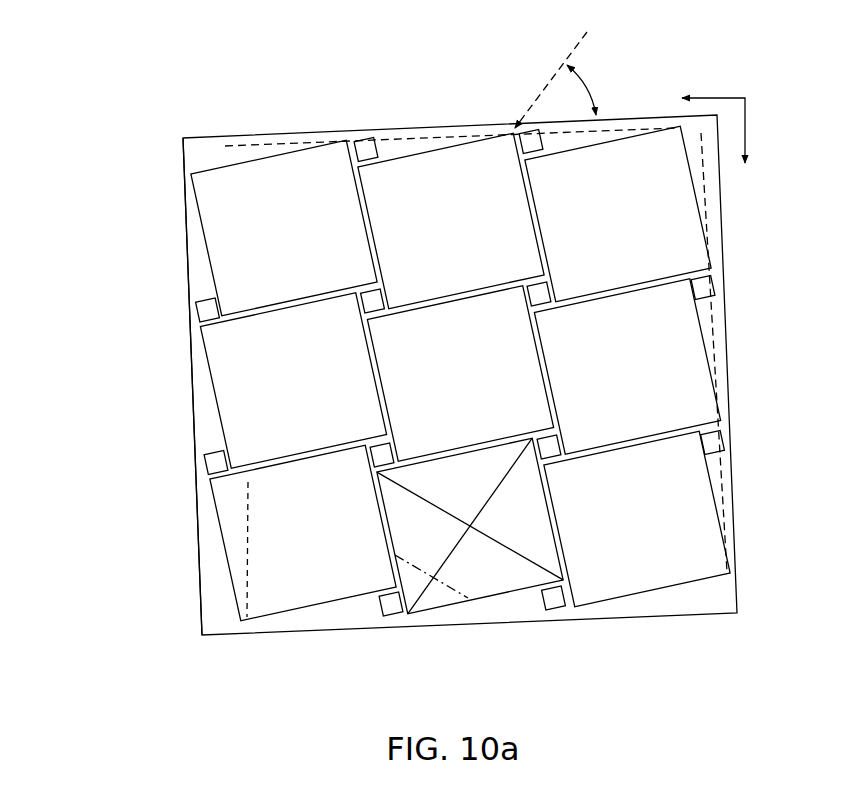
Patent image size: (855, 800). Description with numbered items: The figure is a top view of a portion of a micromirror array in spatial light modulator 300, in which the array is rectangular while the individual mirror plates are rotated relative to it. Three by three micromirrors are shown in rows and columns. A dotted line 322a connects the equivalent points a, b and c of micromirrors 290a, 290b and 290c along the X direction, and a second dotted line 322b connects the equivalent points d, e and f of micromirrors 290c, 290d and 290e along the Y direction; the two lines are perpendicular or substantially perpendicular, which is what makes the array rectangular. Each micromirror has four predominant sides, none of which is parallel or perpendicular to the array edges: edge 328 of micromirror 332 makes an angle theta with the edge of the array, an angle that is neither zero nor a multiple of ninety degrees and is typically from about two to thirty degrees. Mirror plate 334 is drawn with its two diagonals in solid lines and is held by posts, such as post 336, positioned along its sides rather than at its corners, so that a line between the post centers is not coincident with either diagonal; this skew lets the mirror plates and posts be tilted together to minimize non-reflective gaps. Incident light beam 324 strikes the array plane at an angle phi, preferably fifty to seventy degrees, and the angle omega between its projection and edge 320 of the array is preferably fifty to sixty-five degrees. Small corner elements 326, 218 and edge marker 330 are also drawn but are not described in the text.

The spatial light modulator 300 is at (146, 144).
The edge of the micromirror array 320 is at (258, 132).
The dotted line 322a is at (407, 137).
The dotted line 322b is at (715, 348).
The incident light beam 324 is at (550, 83).
The alignment mark 326 is at (210, 455).
The edge of micromirror 328 is at (222, 537).
The substrate edge 330 is at (200, 597).
The micromirror 332 is at (318, 575).
The mirror plate 334 is at (487, 575).
The post 336 is at (553, 590).
The alignment mark 218 is at (380, 447).
The micromirror 290a is at (262, 237).
The micromirror 290b is at (431, 230).
The micromirror 290c is at (578, 223).
The micromirror 290d is at (591, 379).
The micromirror 290e is at (601, 530).